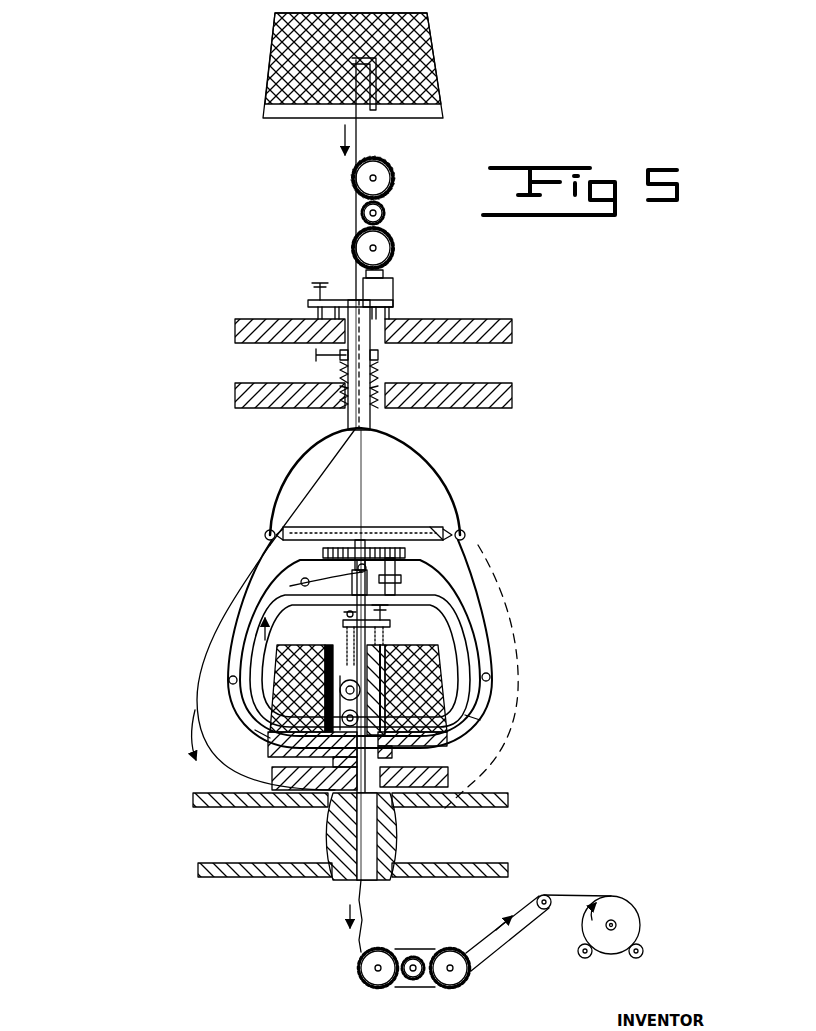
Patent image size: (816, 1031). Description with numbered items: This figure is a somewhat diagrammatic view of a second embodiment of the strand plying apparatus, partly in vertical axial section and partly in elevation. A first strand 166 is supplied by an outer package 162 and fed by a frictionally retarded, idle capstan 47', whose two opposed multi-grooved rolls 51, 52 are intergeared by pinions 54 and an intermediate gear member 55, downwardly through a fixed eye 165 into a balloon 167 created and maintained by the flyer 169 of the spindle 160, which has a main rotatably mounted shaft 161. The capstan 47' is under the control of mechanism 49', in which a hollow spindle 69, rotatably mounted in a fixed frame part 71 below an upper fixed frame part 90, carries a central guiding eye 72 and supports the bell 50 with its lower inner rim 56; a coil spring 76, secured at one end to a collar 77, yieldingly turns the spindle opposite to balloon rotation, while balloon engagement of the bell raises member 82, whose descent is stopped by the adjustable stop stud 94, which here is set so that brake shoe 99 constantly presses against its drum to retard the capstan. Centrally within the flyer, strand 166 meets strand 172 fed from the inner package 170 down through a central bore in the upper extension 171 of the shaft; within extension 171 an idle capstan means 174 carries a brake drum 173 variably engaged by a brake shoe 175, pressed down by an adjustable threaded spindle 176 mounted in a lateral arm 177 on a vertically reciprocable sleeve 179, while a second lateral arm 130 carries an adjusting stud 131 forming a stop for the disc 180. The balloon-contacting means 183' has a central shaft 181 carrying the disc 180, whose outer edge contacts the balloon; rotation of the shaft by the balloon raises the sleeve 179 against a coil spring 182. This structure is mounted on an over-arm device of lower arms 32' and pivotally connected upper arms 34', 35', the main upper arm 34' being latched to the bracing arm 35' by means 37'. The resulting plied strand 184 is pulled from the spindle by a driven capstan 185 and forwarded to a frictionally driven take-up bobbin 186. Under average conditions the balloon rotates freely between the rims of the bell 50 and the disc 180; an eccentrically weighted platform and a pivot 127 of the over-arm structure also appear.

The outer package 162 is at (430, 55).
The fixed eye 165 is at (352, 60).
The first strand 166 is at (358, 126).
The multi-grooved roll 52 is at (388, 168).
The pinions 54 is at (396, 180).
The intermediate gear member 55 is at (386, 212).
The multi-grooved roll 51 is at (388, 240).
The capstan 47' is at (313, 223).
The brake shoe 99 is at (394, 280).
The stop stud 94 is at (308, 303).
The member 82 is at (345, 296).
The upper fixed frame part 90 is at (483, 318).
The fixed frame part 71 is at (478, 383).
The capstan controlling mechanism 49' is at (223, 373).
The hollow spindle 69 is at (348, 428).
The collar 77 is at (380, 357).
The coil spring 76 is at (380, 374).
The bell means 50 is at (428, 458).
The central guiding eye 72 is at (360, 432).
The balloon 167 is at (228, 588).
The spindle 160 is at (498, 598).
The disc 180 is at (400, 526).
The lower inner rim 56 is at (270, 530).
The pivot 127 is at (268, 540).
The central shaft 181 is at (361, 526).
The coil spring 182 is at (406, 554).
The balloon-contacting means 183' is at (466, 511).
The bracing arm 35' is at (386, 644).
The main upper arm portion 34' is at (316, 645).
The strand 172 is at (268, 636).
The latching means 37' is at (403, 576).
The sleeve 179 is at (358, 612).
The adjusting stud 131 is at (392, 628).
The second lateral arm 130 is at (384, 618).
The lateral arm 177 is at (346, 620).
The adjustable threaded spindle 176 is at (340, 630).
The upper extension 171 is at (392, 648).
The idle strand-engaging capstan means 174 is at (437, 660).
The inner package 170 is at (437, 686).
The brake shoe 175 is at (276, 688).
The brake drum 173 is at (290, 688).
The flyer 169 is at (436, 770).
The lower arms 32' is at (364, 734).
The main shaft 161 is at (324, 815).
The plied strand 184 is at (362, 926).
The driven capstan 185 is at (352, 978).
The take-up bobbin 186 is at (632, 908).